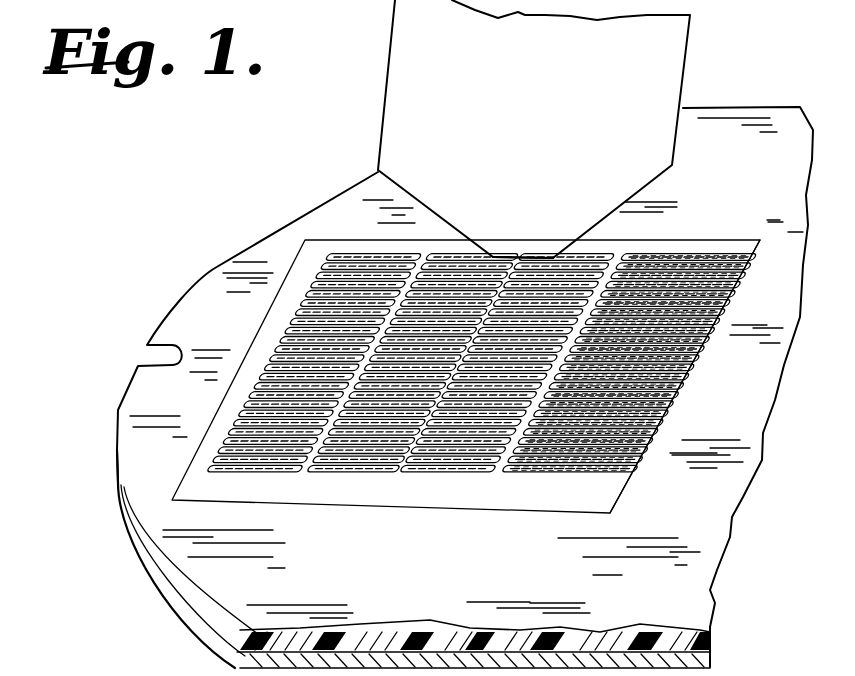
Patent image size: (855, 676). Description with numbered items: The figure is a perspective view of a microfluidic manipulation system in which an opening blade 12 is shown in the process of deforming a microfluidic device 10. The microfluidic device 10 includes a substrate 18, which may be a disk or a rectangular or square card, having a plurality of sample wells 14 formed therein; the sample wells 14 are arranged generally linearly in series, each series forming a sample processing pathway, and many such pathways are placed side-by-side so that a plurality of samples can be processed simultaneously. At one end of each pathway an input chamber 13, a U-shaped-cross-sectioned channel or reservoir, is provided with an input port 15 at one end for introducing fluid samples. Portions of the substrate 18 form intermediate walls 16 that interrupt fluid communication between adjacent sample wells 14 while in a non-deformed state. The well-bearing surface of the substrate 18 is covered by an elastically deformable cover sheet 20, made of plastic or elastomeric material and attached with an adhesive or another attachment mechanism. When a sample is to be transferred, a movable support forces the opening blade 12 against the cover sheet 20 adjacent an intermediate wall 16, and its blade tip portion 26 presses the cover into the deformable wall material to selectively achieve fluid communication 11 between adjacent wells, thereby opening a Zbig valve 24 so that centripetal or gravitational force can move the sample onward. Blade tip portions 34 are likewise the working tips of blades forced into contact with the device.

The microfluidic device 10 is at (145, 294).
The fluid communication 11 is at (400, 473).
The opening blade 12 is at (615, 193).
The input chamber 13 is at (703, 262).
The sample wells 14 is at (365, 257).
The input port 15 is at (698, 360).
The intermediate walls 16 is at (302, 485).
The substrate 18 is at (212, 583).
The elastically deformable cover sheet 20 is at (188, 483).
The Zbig valve 24 is at (393, 528).
The blade tip portion 26 is at (518, 251).
The blade tip portions 34 is at (143, 555).